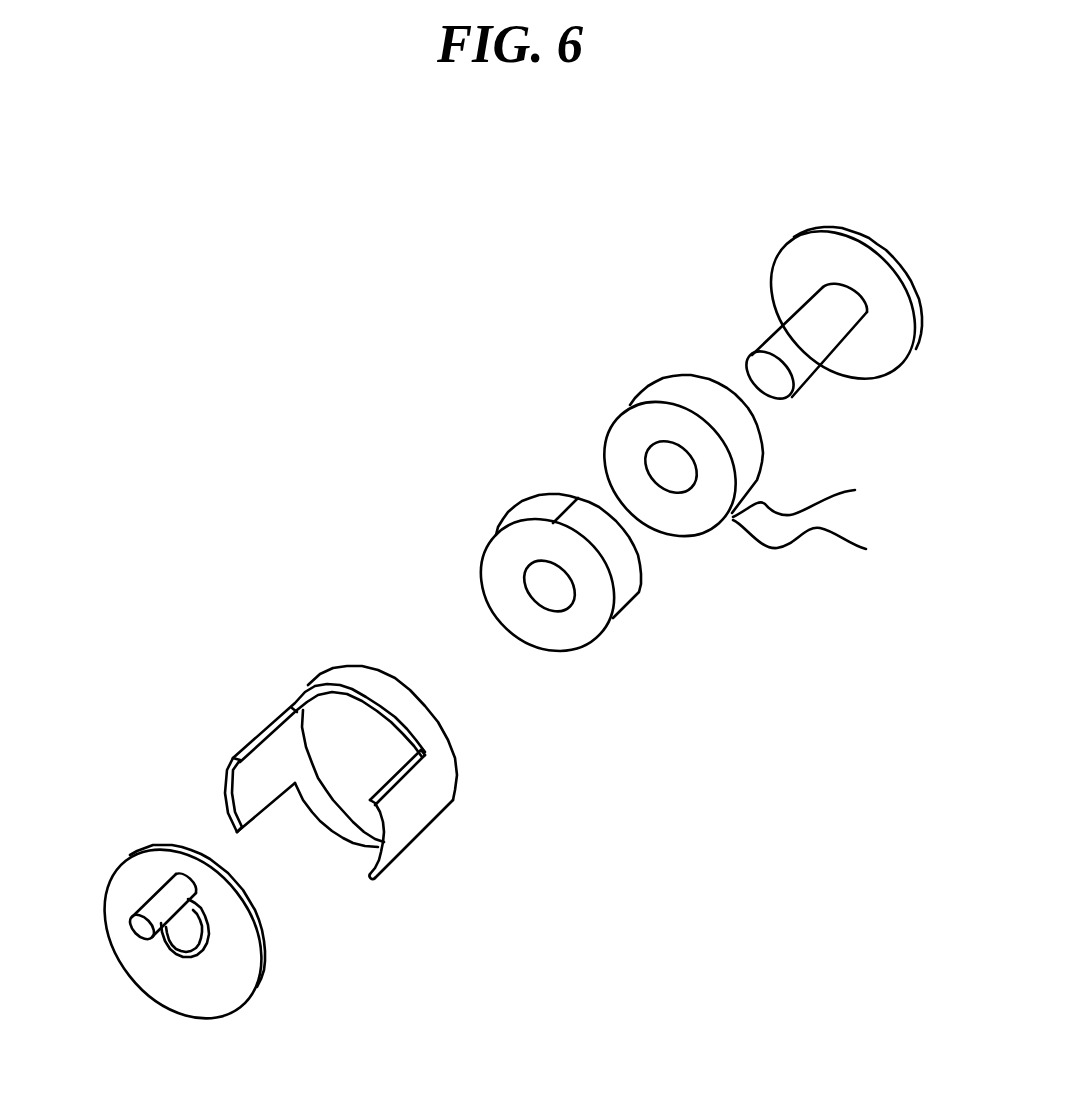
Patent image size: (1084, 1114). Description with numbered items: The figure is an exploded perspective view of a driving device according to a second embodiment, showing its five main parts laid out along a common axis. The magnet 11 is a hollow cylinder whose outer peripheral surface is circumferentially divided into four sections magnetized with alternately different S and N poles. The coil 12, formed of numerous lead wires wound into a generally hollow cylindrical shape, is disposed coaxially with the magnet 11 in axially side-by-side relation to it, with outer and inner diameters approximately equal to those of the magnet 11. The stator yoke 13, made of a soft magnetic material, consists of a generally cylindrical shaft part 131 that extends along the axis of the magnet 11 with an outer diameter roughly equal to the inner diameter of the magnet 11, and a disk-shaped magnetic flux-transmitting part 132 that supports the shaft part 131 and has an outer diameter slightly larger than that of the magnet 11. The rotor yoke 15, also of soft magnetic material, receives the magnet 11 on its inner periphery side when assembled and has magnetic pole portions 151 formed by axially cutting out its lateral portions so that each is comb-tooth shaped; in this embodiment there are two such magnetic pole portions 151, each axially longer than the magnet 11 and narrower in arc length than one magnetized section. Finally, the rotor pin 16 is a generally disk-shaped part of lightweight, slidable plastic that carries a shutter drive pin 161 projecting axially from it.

The magnet 11 is at (512, 545).
The coil 12 is at (653, 393).
The stator yoke 13 is at (799, 292).
The shaft part 131 is at (777, 338).
The magnetic flux-transmitting part 132 is at (878, 350).
The rotor yoke 15 is at (366, 732).
The magnetic pole portions 151 is at (415, 825).
The rotor pin 16 is at (241, 899).
The shutter drive pin 161 is at (182, 898).